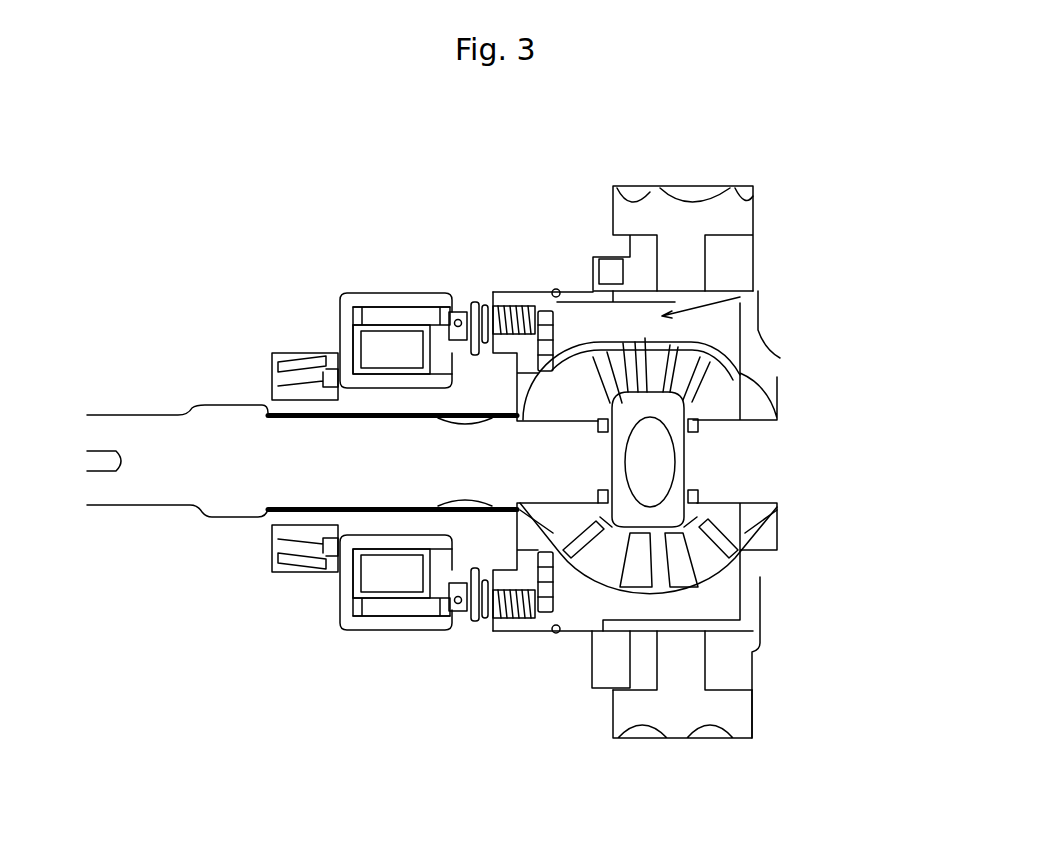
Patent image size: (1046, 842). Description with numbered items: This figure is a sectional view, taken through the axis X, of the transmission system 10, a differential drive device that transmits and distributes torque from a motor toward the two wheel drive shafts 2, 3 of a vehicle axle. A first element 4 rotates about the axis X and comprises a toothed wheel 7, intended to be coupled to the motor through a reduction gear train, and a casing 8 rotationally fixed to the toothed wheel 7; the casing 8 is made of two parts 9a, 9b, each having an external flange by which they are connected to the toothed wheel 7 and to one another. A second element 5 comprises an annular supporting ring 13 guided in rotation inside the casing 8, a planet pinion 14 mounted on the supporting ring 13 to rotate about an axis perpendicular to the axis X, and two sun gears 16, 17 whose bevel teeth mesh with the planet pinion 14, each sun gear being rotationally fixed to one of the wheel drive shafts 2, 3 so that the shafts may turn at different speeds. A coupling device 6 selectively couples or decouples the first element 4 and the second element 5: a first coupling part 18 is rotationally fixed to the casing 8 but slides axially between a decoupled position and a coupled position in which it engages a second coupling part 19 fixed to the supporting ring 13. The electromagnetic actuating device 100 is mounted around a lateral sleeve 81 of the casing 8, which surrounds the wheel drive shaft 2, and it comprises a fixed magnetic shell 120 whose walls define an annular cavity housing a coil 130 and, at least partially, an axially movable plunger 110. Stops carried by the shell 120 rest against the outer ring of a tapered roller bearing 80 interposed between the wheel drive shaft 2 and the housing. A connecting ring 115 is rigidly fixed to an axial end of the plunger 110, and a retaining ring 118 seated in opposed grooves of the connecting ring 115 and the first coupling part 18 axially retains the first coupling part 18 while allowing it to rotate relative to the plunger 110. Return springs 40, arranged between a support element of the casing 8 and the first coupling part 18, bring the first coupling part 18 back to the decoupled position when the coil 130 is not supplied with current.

The wheel drive shaft 2 is at (227, 457).
The wheel drive shaft 3 is at (720, 463).
The first element 4 is at (744, 266).
The second element 5 is at (728, 294).
The coupling device 6 is at (556, 289).
The toothed wheel 7 is at (688, 707).
The casing 8 is at (642, 645).
The casing part 9a is at (645, 255).
The casing part 9b is at (718, 253).
The transmission system 10 is at (798, 190).
The supporting ring 13 is at (697, 330).
The planet pinion 14 is at (657, 368).
The sun gear 16 is at (553, 510).
The sun gear 17 is at (733, 517).
The first coupling part 18 is at (481, 308).
The second coupling part 19 is at (562, 348).
The return spring 40 is at (522, 303).
The tapered roller bearing 80 is at (290, 575).
The lateral sleeve 81 is at (387, 528).
The electromagnetic actuating device 100 is at (327, 319).
The plunger 110 is at (400, 313).
The connecting ring 115 is at (432, 287).
The retaining ring 118 is at (456, 300).
The magnetic shell 120 is at (349, 294).
The coil 130 is at (380, 342).